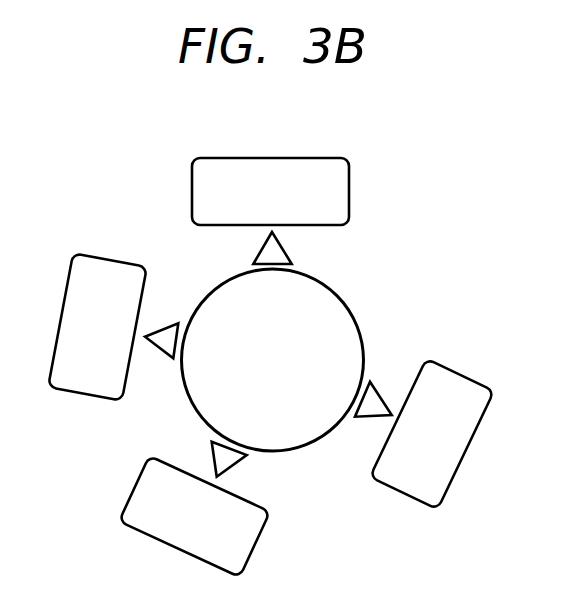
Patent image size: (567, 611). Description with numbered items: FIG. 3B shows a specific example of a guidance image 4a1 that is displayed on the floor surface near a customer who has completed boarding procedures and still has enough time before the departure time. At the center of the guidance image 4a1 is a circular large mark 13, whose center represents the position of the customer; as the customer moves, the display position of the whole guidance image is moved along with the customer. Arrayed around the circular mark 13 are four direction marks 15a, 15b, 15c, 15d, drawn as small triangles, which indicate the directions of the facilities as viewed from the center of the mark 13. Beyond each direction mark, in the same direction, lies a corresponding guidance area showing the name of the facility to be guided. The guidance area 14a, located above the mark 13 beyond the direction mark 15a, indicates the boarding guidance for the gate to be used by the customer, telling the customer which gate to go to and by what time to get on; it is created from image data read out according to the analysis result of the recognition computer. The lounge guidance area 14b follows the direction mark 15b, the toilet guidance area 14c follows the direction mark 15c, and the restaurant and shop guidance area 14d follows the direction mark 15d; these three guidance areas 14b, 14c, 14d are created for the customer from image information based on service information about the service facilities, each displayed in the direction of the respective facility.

The guidance image 4a1 is at (363, 252).
The circular large mark 13 is at (338, 298).
The guidance area 14a is at (298, 158).
The guidance area 14b is at (458, 366).
The guidance area 14c is at (258, 552).
The guidance area 14d is at (108, 257).
The direction mark 15a is at (284, 247).
The direction mark 15b is at (379, 390).
The direction mark 15c is at (233, 468).
The direction mark 15d is at (166, 324).